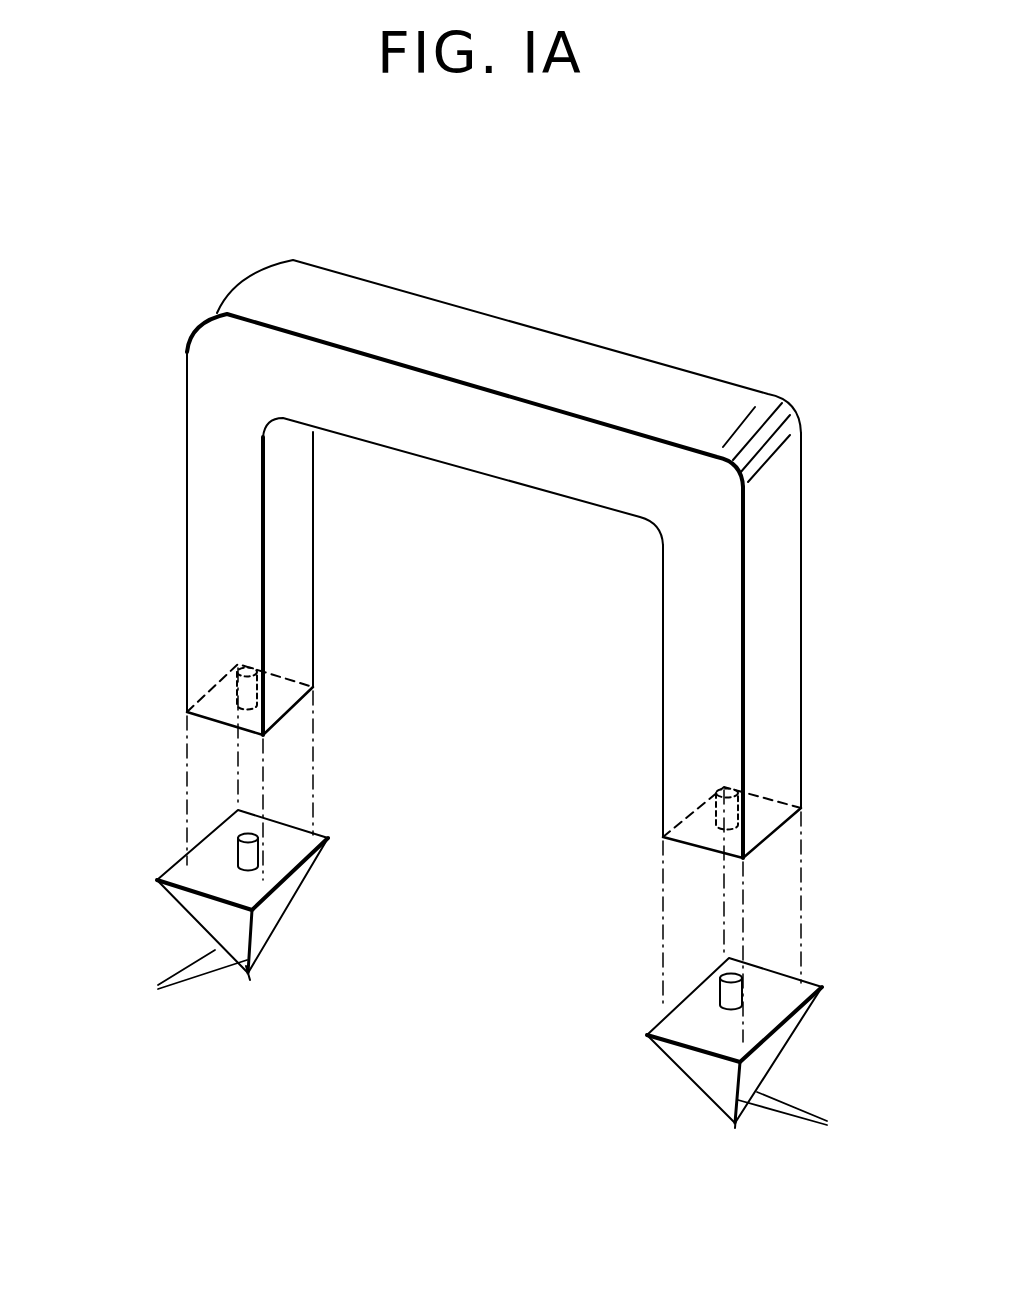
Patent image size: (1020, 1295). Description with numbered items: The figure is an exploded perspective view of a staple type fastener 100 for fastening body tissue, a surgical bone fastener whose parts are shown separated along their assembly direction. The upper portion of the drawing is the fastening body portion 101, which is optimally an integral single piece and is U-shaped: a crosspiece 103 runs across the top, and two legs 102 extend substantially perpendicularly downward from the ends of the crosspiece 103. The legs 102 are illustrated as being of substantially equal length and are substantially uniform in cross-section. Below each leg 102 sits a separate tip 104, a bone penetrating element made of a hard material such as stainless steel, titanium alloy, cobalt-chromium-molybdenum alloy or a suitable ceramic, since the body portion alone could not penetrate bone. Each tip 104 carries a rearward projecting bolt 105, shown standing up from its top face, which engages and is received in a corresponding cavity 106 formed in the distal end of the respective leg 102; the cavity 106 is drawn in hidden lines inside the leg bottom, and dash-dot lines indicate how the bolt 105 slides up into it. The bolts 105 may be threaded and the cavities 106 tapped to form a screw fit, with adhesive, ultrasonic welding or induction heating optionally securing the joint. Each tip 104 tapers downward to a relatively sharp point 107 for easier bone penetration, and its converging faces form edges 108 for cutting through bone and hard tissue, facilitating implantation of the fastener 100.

The staple type fastener 100 is at (845, 338).
The fastening body portion 101 is at (420, 559).
The legs 102 is at (662, 572).
The crosspiece 103 is at (603, 345).
The tips 104 is at (280, 925).
The bolt 105 is at (255, 834).
The cavity 106 is at (255, 671).
The point 107 is at (248, 975).
The edges 108 is at (490, 1046).